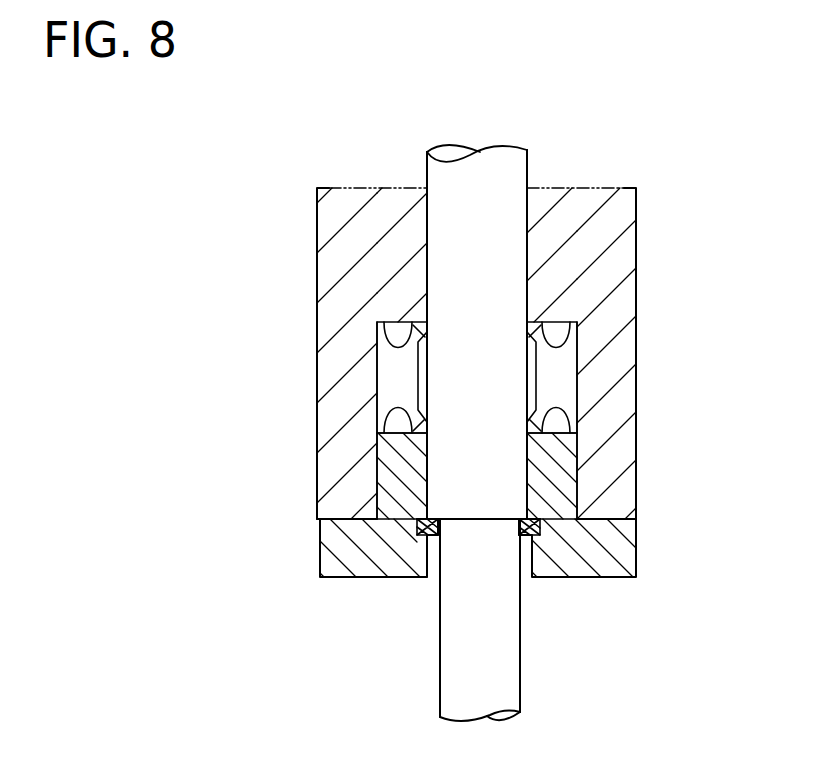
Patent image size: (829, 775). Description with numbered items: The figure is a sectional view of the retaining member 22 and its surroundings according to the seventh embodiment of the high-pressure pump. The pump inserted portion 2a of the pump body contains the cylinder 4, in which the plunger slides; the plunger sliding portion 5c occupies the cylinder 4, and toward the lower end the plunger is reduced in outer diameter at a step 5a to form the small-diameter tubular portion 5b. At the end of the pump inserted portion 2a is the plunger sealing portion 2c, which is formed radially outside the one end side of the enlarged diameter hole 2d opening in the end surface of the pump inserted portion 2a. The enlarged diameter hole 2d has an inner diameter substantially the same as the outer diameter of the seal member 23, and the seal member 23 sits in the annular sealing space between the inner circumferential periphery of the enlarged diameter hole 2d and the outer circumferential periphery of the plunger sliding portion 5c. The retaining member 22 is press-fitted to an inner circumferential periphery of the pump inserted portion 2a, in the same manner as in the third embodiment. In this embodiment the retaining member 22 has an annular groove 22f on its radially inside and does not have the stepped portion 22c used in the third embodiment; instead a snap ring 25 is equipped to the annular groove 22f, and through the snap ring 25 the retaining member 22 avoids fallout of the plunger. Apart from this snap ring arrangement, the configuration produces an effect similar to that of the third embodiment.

The cylinder 4 is at (524, 222).
The pump inserted portion 2a is at (600, 220).
The plunger sealing portion 2c is at (585, 378).
The seal member 23 is at (558, 368).
The enlarged diameter hole 2d is at (574, 451).
The retaining member 22 is at (310, 546).
The annular groove 22f is at (427, 538).
The stepped portion 22c is at (528, 507).
The snap ring 25 is at (543, 529).
The step 5a is at (480, 519).
The small-diameter tubular portion 5b is at (465, 618).
The plunger sliding portion 5c is at (450, 267).